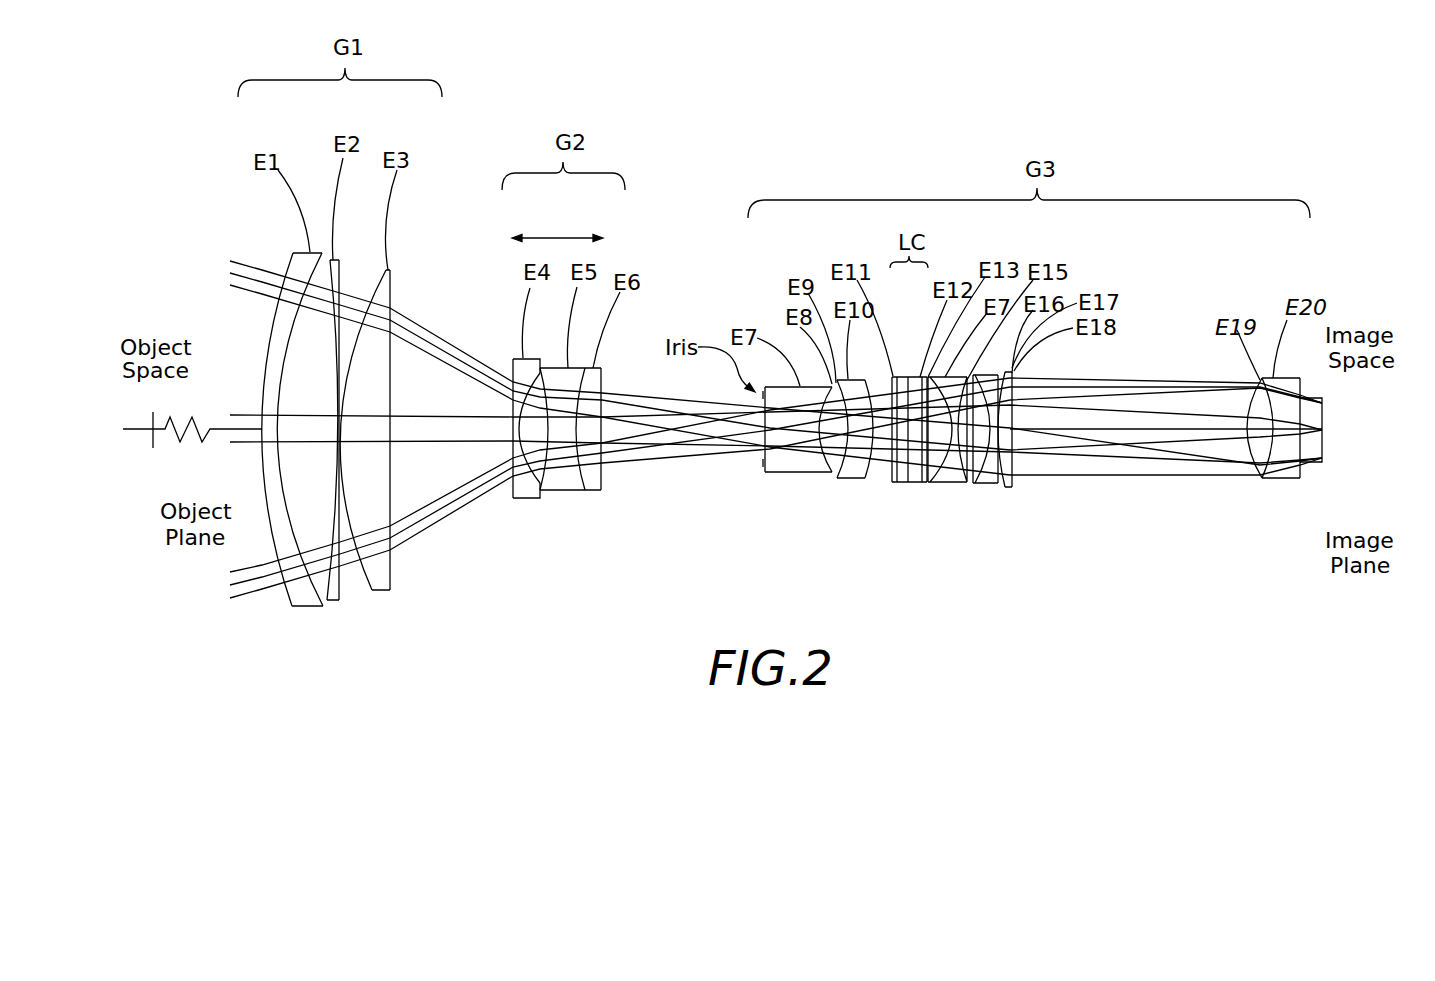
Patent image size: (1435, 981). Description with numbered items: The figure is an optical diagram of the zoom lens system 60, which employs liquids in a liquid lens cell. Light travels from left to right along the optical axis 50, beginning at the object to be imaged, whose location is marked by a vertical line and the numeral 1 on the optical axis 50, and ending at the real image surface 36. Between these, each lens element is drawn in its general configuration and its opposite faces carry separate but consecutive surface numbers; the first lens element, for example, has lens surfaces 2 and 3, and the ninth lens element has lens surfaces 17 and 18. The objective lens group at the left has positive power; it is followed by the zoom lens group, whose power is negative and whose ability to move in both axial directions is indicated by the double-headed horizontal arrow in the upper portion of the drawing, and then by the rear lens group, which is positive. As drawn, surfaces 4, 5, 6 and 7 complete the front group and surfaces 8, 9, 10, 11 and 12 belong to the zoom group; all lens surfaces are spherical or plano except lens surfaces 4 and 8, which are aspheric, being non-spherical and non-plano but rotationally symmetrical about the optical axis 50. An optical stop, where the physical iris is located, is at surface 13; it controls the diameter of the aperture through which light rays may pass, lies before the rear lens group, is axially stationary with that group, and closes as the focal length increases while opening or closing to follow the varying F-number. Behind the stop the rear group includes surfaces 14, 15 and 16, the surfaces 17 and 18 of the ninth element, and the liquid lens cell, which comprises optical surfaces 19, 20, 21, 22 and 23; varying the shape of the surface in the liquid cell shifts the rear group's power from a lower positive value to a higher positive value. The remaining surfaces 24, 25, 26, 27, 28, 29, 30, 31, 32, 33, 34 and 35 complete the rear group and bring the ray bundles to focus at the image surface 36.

The object location 1 is at (153, 445).
The lens surface 2 is at (283, 607).
The lens surface 3 is at (308, 610).
The aspheric lens surface 4 is at (328, 605).
The lens surface 5 is at (342, 603).
The lens surface 6 is at (375, 592).
The lens surface 7 is at (392, 592).
The aspheric lens surface 8 is at (512, 498).
The lens surface 9 is at (528, 493).
The lens surface 10 is at (548, 490).
The lens surface 11 is at (578, 492).
The lens surface 12 is at (603, 490).
The optical stop surface 13 is at (762, 462).
The lens surface 14 is at (778, 473).
The lens surface 15 is at (823, 467).
The lens surface 16 is at (837, 478).
The lens surface 17 is at (855, 480).
The lens surface 18 is at (868, 480).
The liquid lens cell optical surface 19 is at (887, 482).
The liquid lens cell optical surface 20 is at (903, 483).
The liquid lens cell optical surface 21 is at (920, 482).
The liquid lens cell optical surface 22 is at (928, 483).
The liquid lens cell optical surface 23 is at (932, 483).
The lens surface 24 is at (943, 485).
The lens surface 25 is at (955, 483).
The lens surface 26 is at (985, 485).
The lens surface 27 is at (1012, 475).
The lens surface 28 is at (1010, 428).
The lens surface 29 is at (1023, 432).
The lens surface 30 is at (1015, 378).
The lens surface 31 is at (1020, 380).
The lens surface 32 is at (1023, 382).
The lens surface 33 is at (1260, 478).
The lens surface 34 is at (1267, 478).
The lens surface 35 is at (1293, 478).
The real image surface 36 is at (1323, 445).
The optical axis 50 is at (133, 433).
The zoom lens system 60 is at (703, 210).